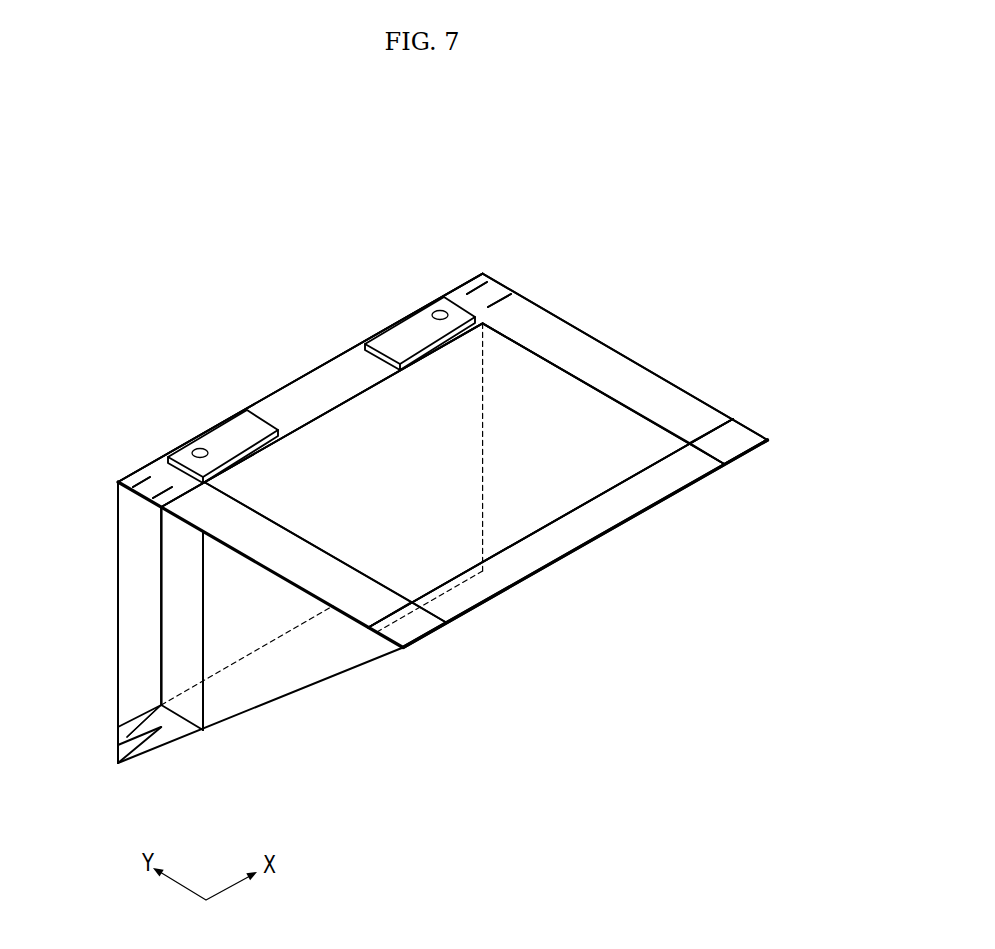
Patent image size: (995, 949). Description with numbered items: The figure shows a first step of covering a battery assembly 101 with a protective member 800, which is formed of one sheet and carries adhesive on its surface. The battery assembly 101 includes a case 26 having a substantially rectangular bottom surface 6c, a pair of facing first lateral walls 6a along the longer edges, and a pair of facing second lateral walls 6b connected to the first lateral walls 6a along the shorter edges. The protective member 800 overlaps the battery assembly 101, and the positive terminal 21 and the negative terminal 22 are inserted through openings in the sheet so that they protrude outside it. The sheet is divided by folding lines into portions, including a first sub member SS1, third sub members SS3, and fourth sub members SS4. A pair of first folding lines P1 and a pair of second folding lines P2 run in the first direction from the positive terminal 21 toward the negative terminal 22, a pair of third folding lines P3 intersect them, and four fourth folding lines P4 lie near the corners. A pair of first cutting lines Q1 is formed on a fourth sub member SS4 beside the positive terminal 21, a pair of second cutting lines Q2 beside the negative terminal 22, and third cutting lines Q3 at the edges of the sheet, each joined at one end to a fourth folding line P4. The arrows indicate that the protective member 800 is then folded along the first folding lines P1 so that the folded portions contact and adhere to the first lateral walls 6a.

The protective member 800 is at (688, 506).
The battery assembly 101 is at (210, 758).
The first lateral wall 6a is at (238, 643).
The second lateral wall 6b is at (197, 668).
The bottom surface 6c is at (285, 667).
The positive terminal 21 is at (225, 427).
The negative terminal 22 is at (398, 330).
The case 26 is at (482, 535).
The first folding line P1 is at (287, 383).
The second folding line P2 is at (582, 503).
The third folding line P3 is at (566, 375).
The fourth folding line P4 is at (707, 430).
The first cutting line Q1 is at (163, 488).
The second cutting line Q2 is at (498, 302).
The third cutting line Q3 is at (740, 433).
The first sub member SS1 is at (342, 363).
The third sub member SS3 is at (747, 443).
The fourth sub member SS4 is at (612, 363).